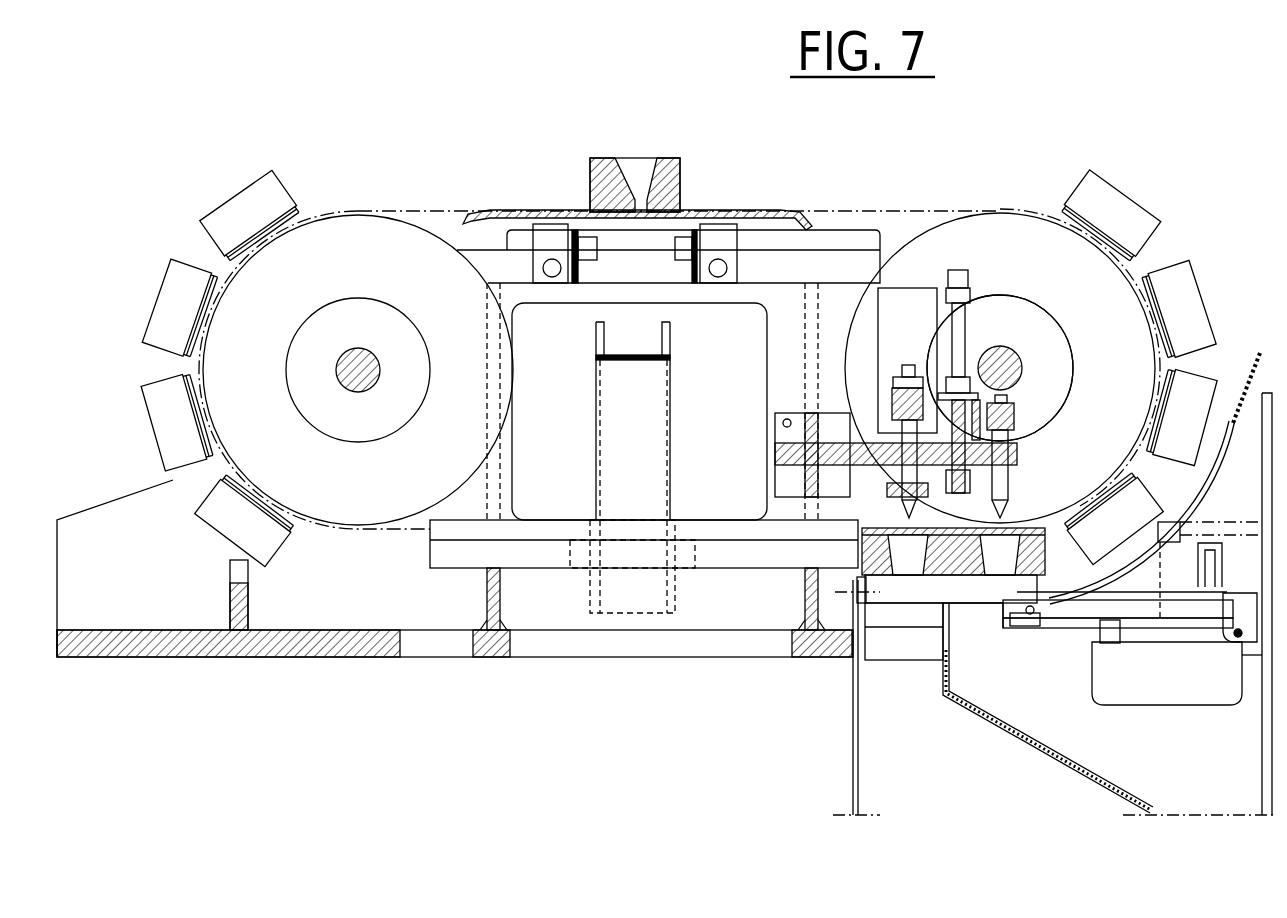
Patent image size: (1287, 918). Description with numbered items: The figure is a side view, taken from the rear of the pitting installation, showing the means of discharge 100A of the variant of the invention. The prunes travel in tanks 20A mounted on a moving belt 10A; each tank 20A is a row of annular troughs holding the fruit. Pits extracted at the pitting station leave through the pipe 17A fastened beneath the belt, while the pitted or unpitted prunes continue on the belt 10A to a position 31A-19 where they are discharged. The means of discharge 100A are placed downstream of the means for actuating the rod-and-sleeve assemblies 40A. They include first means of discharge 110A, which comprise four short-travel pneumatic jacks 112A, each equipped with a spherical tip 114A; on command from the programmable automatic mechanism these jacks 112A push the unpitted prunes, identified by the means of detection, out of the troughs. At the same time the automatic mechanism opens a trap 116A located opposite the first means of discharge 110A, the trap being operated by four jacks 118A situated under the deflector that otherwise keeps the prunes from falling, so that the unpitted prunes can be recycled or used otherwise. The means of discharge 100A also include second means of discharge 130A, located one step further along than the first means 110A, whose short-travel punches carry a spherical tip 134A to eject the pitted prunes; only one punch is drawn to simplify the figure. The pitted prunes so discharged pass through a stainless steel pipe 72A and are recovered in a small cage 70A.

The moving belt 10A is at (425, 211).
The tank 20A is at (1130, 198).
The means for actuating the rod-and-sleeve assemblies 40A is at (680, 158).
The pipe for the discharge of the pits 17A is at (596, 462).
The means of discharge 100A is at (1037, 322).
The second means of discharge 130A is at (948, 317).
The jack 112A is at (1010, 417).
The first means of discharge 110A is at (1017, 443).
The spherical tip 114A is at (1017, 497).
The spherical tip 134A is at (885, 490).
The trap 116A is at (998, 617).
The jack 118A is at (1092, 628).
The position 31A-19 is at (1062, 605).
The stainless steel pipe 72A is at (853, 721).
The small cage 70A is at (936, 791).